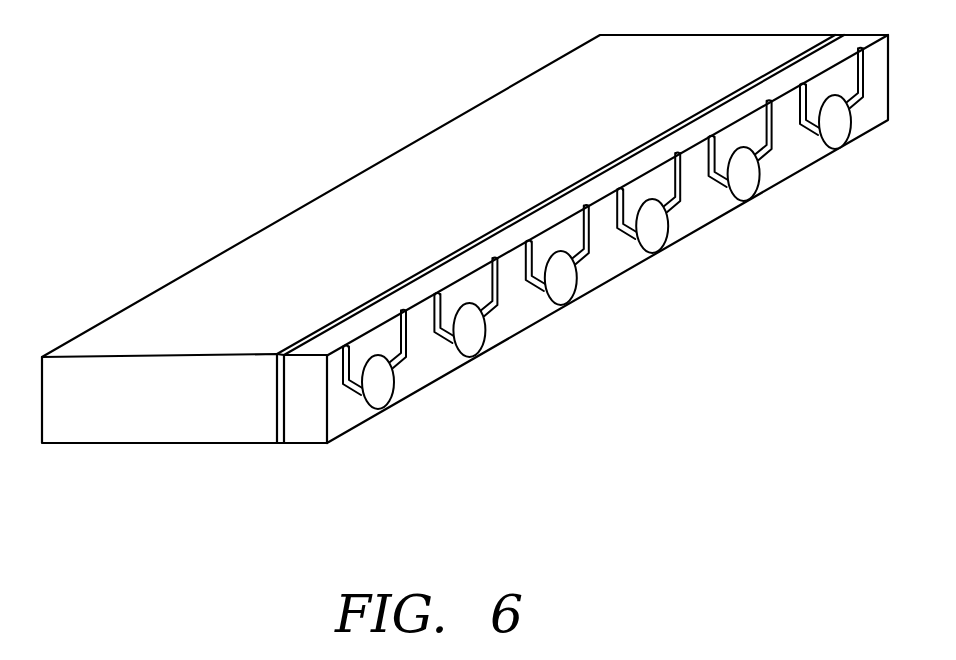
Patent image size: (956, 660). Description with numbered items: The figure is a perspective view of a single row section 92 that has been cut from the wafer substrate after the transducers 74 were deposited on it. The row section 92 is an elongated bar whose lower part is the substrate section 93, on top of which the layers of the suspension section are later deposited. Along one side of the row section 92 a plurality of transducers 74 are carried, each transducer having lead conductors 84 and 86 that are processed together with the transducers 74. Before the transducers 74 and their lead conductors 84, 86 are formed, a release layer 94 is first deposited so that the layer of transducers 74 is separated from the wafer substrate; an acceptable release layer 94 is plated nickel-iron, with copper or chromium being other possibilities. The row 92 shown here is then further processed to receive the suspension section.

The transducers 74 is at (602, 283).
The lead conductor 84 is at (345, 387).
The lead conductor 86 is at (403, 349).
The row section 92 is at (454, 283).
The substrate section 93 is at (82, 420).
The release layer 94 is at (277, 443).